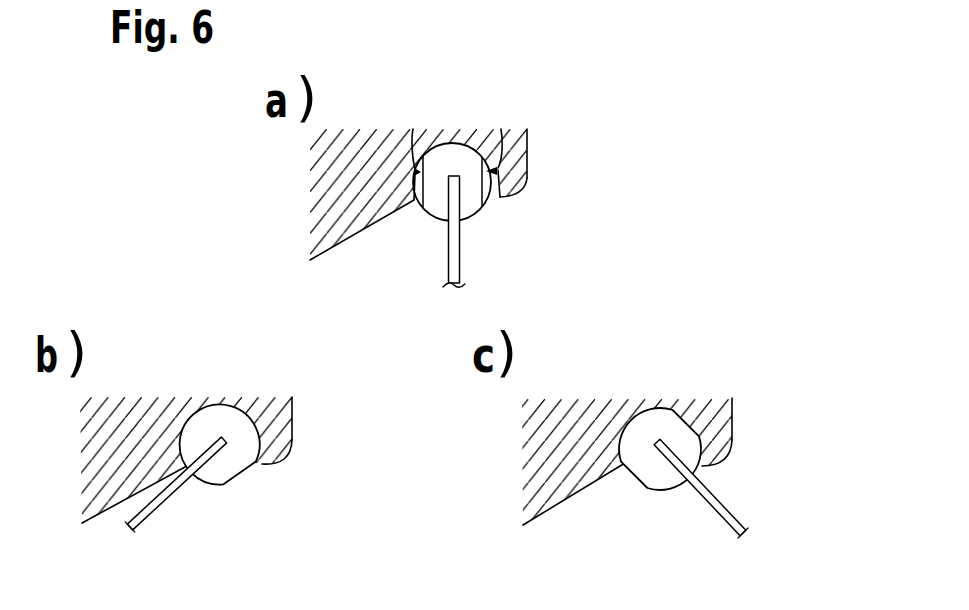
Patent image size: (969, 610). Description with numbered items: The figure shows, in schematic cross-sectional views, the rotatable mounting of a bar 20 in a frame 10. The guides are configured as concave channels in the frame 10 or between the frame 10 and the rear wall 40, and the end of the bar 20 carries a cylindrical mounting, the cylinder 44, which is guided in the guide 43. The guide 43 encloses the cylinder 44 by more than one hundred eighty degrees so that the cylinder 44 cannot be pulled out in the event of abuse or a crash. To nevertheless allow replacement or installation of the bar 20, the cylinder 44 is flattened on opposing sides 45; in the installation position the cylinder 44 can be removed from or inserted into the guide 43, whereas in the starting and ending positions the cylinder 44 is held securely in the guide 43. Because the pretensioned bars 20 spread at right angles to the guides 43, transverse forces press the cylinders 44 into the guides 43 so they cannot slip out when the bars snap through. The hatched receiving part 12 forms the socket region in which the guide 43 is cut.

The fastening arrangement 10 is at (519, 184).
The receiving part with socket 12 is at (527, 153).
The pin 20 is at (460, 262).
The bearing surface 40 is at (360, 230).
The undercut 43 is at (527, 177).
The ball head 44 is at (448, 155).
The latching lug 45 is at (413, 128).